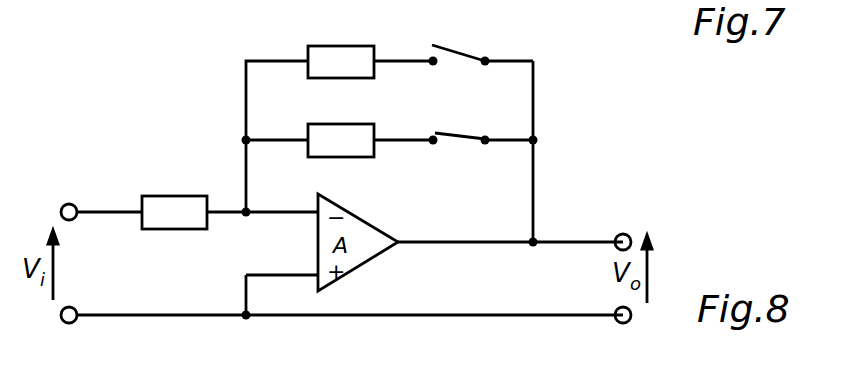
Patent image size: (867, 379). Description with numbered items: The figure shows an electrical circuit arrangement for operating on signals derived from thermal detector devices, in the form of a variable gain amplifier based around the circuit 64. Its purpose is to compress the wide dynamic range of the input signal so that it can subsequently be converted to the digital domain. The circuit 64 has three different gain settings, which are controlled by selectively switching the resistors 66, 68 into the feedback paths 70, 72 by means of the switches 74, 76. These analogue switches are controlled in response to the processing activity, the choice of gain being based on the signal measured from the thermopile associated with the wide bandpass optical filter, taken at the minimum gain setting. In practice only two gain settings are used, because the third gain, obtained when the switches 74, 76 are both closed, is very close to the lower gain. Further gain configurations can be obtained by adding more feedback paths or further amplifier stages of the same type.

The circuit 64 is at (147, 184).
The resistor 66 is at (383, 166).
The resistor 68 is at (357, 36).
The feedback path 70 is at (282, 129).
The feedback path 72 is at (246, 50).
The switch 74 is at (490, 155).
The switch 76 is at (497, 48).